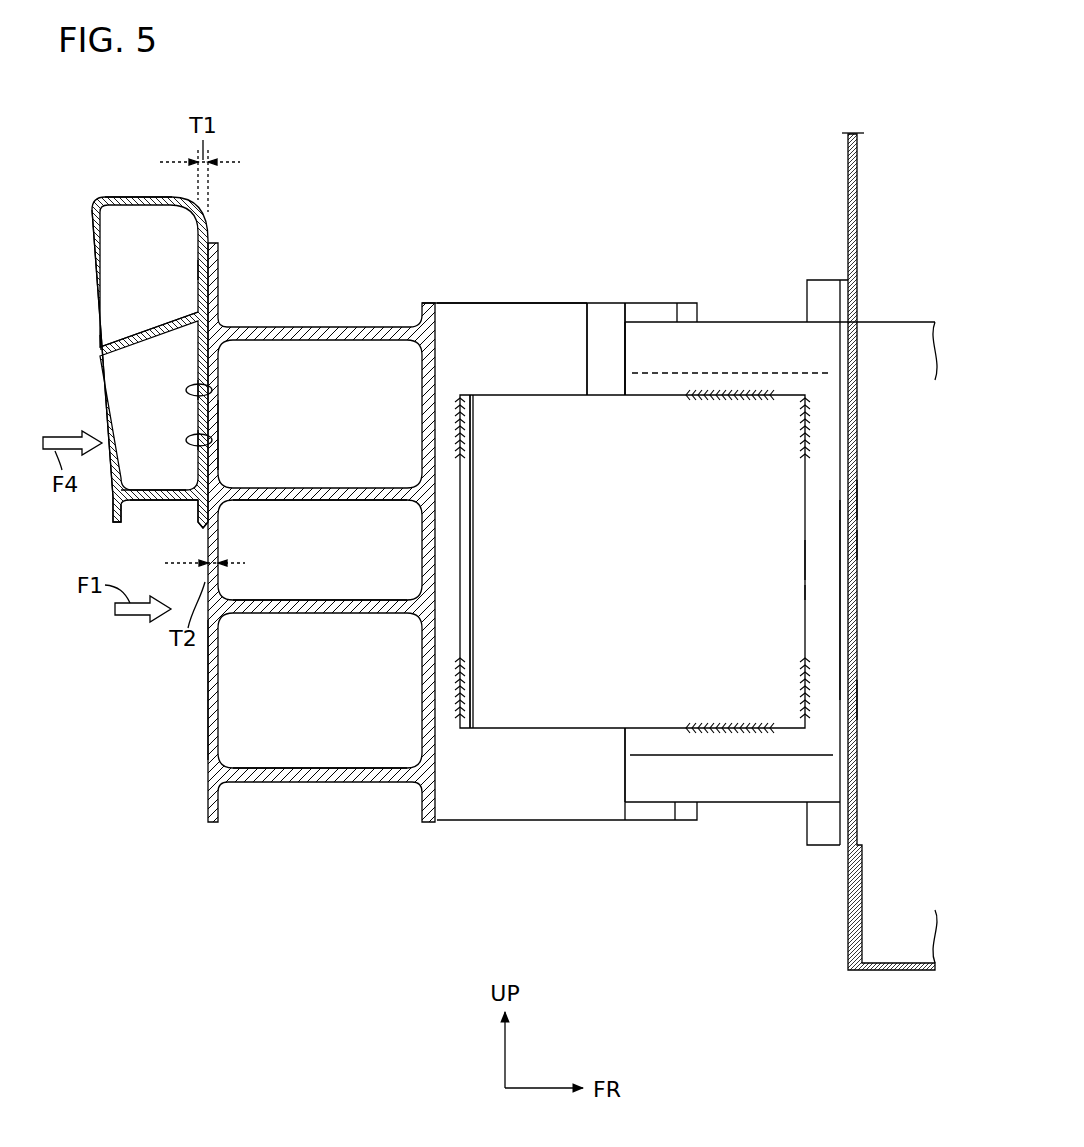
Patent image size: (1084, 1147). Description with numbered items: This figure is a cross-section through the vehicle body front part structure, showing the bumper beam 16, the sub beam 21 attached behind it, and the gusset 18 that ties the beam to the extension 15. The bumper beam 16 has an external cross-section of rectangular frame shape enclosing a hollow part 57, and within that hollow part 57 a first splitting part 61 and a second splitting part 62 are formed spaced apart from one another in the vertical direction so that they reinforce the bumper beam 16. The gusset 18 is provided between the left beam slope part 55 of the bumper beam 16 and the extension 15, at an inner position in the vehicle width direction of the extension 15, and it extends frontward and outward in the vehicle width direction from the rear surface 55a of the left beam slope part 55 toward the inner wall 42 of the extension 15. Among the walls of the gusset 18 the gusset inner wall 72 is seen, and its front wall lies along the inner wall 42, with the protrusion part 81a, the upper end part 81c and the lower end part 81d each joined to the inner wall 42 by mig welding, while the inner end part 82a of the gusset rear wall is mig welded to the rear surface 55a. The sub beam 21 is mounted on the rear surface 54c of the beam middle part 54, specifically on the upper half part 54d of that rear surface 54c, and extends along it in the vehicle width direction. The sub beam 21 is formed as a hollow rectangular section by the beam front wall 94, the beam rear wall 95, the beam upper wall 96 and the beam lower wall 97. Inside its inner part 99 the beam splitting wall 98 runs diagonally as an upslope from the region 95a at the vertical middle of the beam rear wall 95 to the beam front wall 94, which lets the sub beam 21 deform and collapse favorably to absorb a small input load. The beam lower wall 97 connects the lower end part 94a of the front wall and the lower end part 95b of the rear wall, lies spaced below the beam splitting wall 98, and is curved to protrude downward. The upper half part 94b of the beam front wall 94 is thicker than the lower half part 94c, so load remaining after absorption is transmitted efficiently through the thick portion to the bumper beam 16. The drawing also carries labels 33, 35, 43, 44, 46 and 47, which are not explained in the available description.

The extension 15 is at (735, 318).
The bumper beam 16 is at (206, 683).
The gusset 18 is at (812, 587).
The sub beam 21 is at (98, 311).
The panel surface 33 is at (858, 497).
The panel portion 35 is at (932, 538).
The inner wall 42 is at (808, 352).
The upper bracket portion 43 is at (779, 320).
The lower bracket portion 44 is at (750, 804).
The bracket vertical wall 46 is at (846, 632).
The bracket rib 47 is at (605, 803).
The beam middle part 54 is at (248, 532).
The rear surface 54c is at (206, 705).
The upper half part 54d is at (206, 432).
The left beam slope part 55 is at (500, 822).
The rear surface 55a is at (503, 383).
The hollow part 57 is at (311, 700).
The first splitting part 61 is at (295, 500).
The second splitting part 62 is at (344, 602).
The gusset inner wall 72 is at (602, 567).
The protrusion part 81a is at (812, 562).
The upper end part 81c is at (655, 390).
The lower end part 81d is at (668, 732).
The inner end part 82a is at (480, 515).
The beam front wall 94 is at (207, 393).
The lower end part 94a is at (210, 498).
The upper half part 94b is at (205, 270).
The lower half part 94c is at (207, 437).
The beam rear wall 95 is at (101, 389).
The region of the middle part 95a is at (101, 345).
The lower end part 95b is at (113, 505).
The beam upper wall 96 is at (146, 196).
The beam lower wall 97 is at (158, 502).
The beam splitting wall 98 is at (152, 338).
The inner part 99 is at (164, 378).